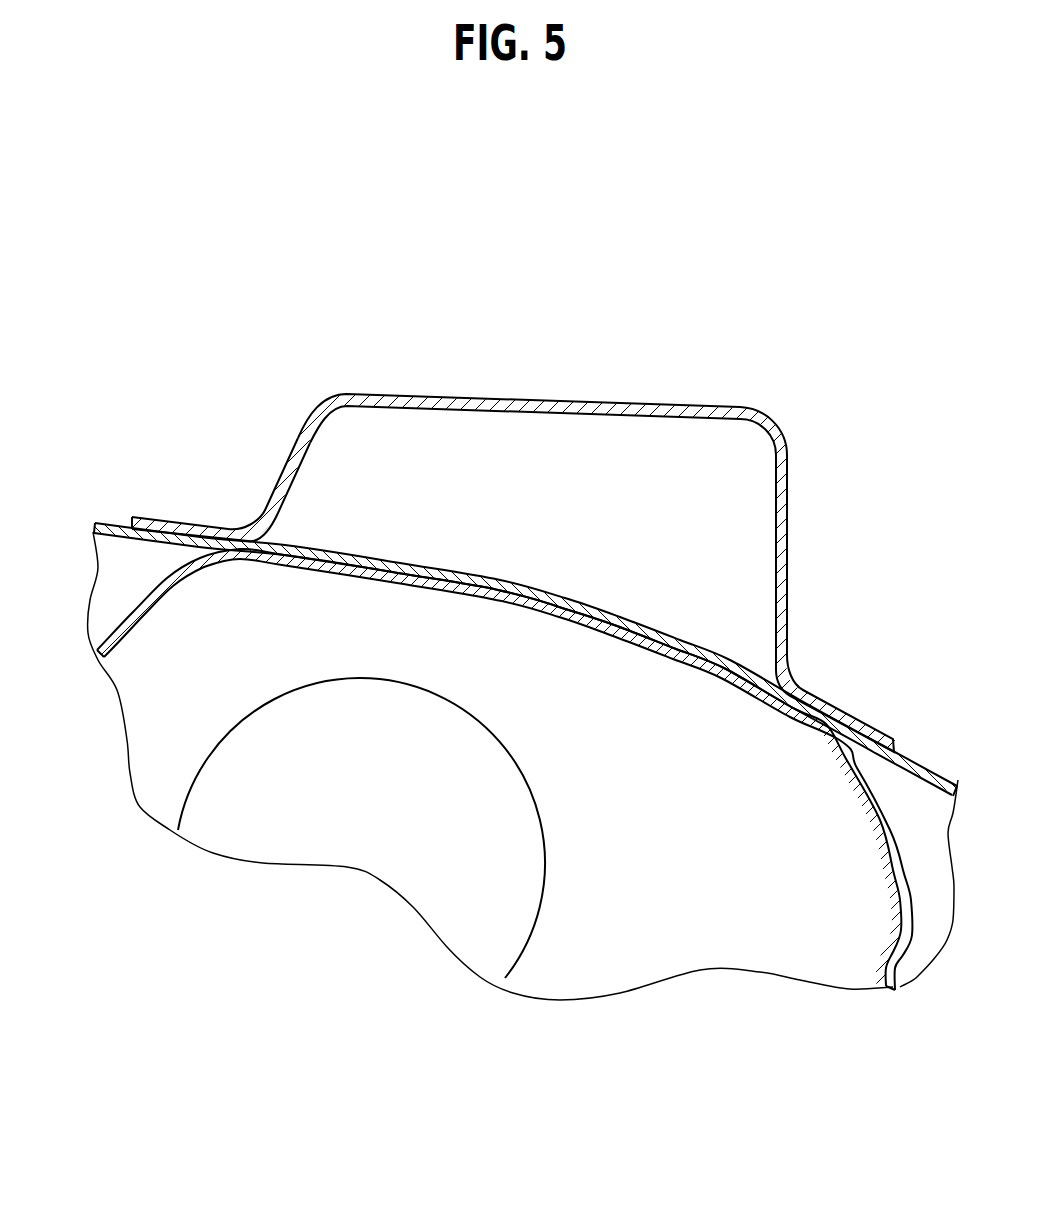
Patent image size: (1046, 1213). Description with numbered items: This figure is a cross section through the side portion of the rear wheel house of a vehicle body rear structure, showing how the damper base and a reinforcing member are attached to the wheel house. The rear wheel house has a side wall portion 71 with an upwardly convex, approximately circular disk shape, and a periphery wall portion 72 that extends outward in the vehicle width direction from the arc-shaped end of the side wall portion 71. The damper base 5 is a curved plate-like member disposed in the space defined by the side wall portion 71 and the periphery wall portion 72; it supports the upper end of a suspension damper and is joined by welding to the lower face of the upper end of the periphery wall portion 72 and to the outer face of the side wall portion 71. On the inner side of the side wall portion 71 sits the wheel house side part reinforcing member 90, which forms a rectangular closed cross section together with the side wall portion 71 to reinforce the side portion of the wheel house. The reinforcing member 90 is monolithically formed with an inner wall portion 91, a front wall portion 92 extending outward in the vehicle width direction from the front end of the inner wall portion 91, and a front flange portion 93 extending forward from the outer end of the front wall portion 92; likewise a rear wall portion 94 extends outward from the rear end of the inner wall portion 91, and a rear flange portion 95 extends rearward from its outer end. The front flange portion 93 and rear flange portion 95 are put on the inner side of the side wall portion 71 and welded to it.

The damper base 5 is at (162, 597).
The side wall portion 71 is at (93, 515).
The periphery wall portion 72 is at (120, 570).
The wheel house side part reinforcing member 90 is at (513, 529).
The inner wall portion 91 is at (550, 400).
The front wall portion 92 is at (788, 538).
The front flange portion 93 is at (852, 712).
The rear wall portion 94 is at (292, 438).
The rear flange portion 95 is at (181, 517).